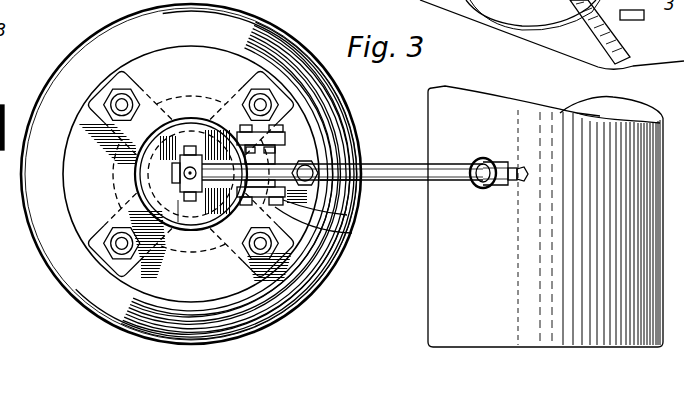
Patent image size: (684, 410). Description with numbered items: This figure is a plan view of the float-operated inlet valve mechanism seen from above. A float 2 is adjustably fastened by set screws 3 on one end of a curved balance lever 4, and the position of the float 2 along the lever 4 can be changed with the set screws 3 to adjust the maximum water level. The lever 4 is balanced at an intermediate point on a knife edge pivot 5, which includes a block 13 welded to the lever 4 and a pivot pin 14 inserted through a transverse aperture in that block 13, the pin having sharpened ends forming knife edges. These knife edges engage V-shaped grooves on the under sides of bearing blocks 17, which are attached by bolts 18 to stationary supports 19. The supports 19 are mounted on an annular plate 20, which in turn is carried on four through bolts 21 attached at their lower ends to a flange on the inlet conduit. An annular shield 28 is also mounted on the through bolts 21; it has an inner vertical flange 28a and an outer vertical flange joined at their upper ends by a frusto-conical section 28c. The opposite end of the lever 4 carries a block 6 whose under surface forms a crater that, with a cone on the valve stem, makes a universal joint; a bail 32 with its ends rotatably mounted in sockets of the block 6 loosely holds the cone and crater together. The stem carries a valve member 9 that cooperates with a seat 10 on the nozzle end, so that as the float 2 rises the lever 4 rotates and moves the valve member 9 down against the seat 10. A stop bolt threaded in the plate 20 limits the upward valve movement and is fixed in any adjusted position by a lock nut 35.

The float 2 is at (429, 298).
The set screws 3 is at (517, 180).
The curved balance lever 4 is at (455, 175).
The knife edge pivot 5 is at (312, 113).
The block 6 is at (180, 187).
The valve member 9 is at (192, 222).
The seat 10 is at (182, 222).
The block 13 is at (361, 178).
The pivot pin 14 is at (333, 158).
The bearing blocks 17 is at (330, 142).
The bolts 18 is at (305, 107).
The stationary supports 19 is at (323, 130).
The annular plate 20 is at (144, 287).
The through bolts 21 is at (124, 100).
The annular shield 28 is at (35, 254).
The inner vertical flange 28a is at (138, 175).
The frusto-conical section 28c is at (200, 336).
The bail 32 is at (190, 152).
The lock nut 35 is at (347, 215).